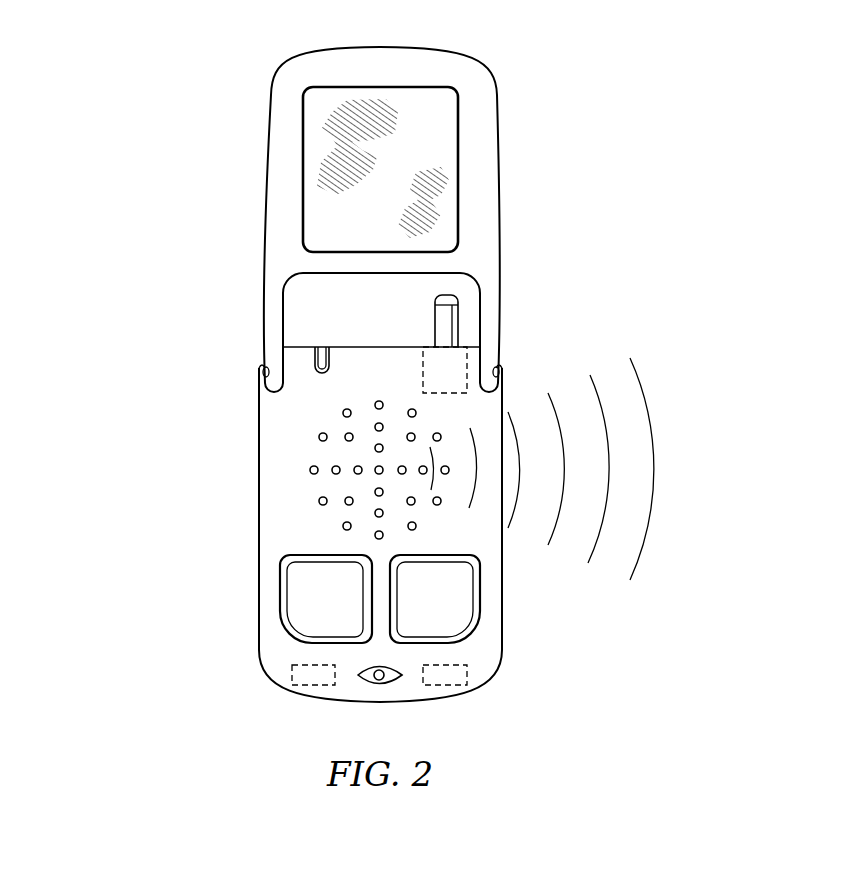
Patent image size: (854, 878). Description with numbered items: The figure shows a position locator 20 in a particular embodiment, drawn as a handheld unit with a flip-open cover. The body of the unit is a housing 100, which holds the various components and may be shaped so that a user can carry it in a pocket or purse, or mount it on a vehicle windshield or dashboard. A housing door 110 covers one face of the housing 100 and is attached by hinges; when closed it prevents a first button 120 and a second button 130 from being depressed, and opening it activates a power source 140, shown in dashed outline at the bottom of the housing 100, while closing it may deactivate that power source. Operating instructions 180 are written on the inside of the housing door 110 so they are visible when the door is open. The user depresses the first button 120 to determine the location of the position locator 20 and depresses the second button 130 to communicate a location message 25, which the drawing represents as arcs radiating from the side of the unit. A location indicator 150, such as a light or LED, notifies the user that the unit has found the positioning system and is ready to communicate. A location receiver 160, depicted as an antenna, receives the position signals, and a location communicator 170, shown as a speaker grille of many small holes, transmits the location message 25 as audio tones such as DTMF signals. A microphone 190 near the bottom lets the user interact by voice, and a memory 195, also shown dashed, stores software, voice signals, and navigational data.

The position locator 20 is at (131, 69).
The location message 25 is at (666, 382).
The housing 100 is at (270, 665).
The housing door 110 is at (452, 152).
The first button 120 is at (300, 590).
The second button 130 is at (459, 590).
The power source 140 is at (452, 692).
The location indicator 150 is at (322, 341).
The location receiver 160 is at (435, 322).
The location communicator 170 is at (310, 470).
The operating instructions 180 is at (302, 155).
The microphone 190 is at (378, 690).
The memory 195 is at (308, 692).